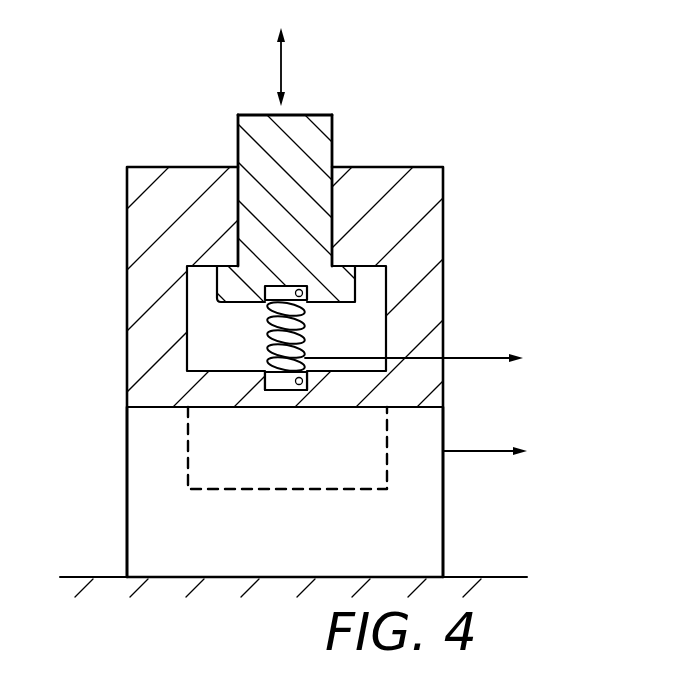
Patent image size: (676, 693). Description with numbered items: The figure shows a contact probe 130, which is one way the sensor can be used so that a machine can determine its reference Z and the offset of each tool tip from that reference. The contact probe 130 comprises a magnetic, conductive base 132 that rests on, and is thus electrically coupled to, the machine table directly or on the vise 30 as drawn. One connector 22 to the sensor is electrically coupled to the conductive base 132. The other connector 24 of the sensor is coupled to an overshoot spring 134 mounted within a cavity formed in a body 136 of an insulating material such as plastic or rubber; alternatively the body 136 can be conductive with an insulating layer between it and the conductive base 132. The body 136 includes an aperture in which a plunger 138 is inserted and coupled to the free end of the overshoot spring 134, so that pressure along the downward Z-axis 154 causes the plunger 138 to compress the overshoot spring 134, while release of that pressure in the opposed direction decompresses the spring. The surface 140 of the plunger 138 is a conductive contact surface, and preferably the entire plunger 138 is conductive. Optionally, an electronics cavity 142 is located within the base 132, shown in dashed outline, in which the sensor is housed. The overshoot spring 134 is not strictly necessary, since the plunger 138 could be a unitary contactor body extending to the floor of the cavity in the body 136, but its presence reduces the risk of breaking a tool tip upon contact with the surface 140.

The contact probe 130 is at (150, 132).
The conductive base 132 is at (140, 446).
The overshoot spring 134 is at (302, 327).
The body 136 is at (136, 235).
The plunger 138 is at (328, 152).
The surface 140 is at (313, 113).
The electronics cavity 142 is at (188, 477).
The downward Z-axis 154 is at (283, 68).
The connector 24 is at (460, 358).
The connector 22 is at (482, 452).
The vise 30 is at (488, 577).